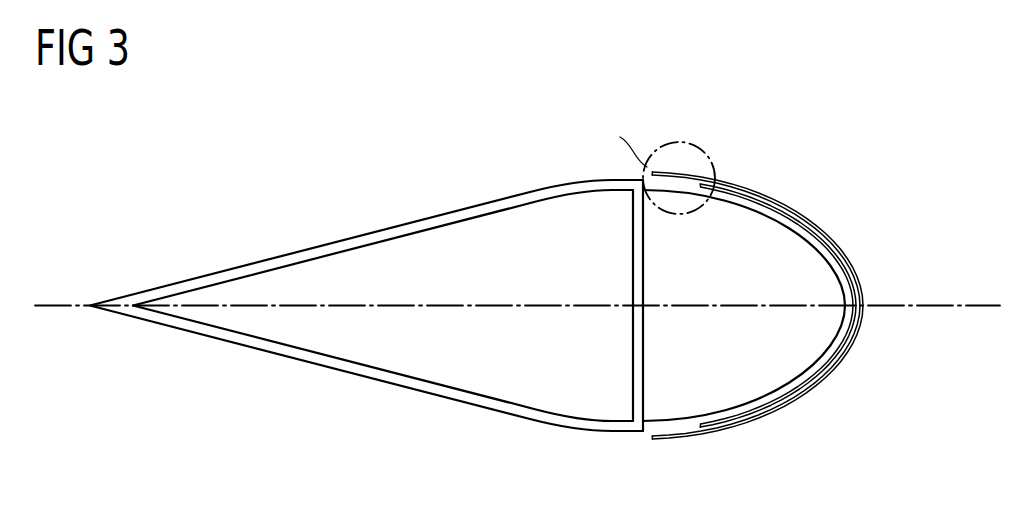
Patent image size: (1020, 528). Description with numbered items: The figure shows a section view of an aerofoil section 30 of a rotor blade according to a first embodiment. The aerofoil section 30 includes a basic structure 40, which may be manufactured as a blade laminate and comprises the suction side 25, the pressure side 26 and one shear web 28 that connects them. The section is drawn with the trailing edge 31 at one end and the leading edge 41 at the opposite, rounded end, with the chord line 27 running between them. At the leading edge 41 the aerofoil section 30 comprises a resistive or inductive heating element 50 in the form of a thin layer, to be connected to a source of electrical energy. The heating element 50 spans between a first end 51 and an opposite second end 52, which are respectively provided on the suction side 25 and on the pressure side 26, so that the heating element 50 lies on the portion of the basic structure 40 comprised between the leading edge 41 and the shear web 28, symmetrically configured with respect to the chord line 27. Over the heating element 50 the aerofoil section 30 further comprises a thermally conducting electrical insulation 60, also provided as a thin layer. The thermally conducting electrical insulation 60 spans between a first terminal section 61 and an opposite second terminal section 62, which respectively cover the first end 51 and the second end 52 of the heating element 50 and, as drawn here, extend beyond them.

The suction side 25 is at (465, 207).
The pressure side 26 is at (425, 395).
The chord line 27 is at (258, 305).
The shear web 28 is at (632, 352).
The aerofoil section 30 is at (806, 126).
The trailing edge 31 is at (87, 303).
The basic structure 40 is at (338, 239).
The leading edge 41 is at (863, 300).
The heating element 50 is at (818, 383).
The first end 51 is at (692, 187).
The second end 52 is at (690, 427).
The thermally conducting electrical insulation 60 is at (827, 218).
The first terminal section 61 is at (671, 173).
The second terminal section 62 is at (675, 443).